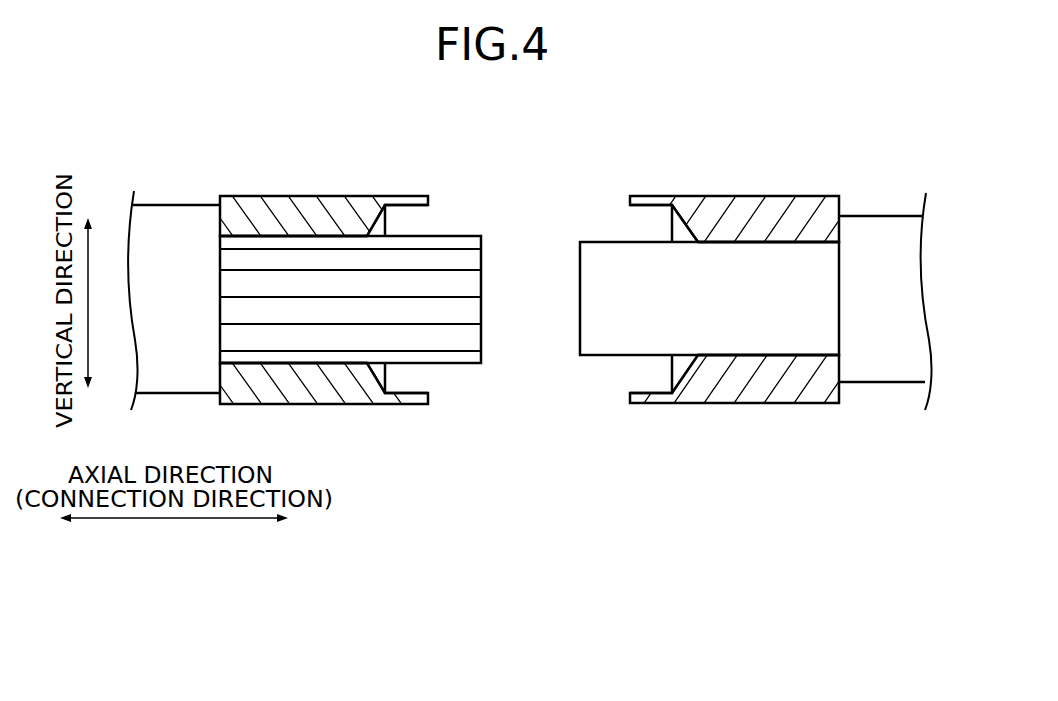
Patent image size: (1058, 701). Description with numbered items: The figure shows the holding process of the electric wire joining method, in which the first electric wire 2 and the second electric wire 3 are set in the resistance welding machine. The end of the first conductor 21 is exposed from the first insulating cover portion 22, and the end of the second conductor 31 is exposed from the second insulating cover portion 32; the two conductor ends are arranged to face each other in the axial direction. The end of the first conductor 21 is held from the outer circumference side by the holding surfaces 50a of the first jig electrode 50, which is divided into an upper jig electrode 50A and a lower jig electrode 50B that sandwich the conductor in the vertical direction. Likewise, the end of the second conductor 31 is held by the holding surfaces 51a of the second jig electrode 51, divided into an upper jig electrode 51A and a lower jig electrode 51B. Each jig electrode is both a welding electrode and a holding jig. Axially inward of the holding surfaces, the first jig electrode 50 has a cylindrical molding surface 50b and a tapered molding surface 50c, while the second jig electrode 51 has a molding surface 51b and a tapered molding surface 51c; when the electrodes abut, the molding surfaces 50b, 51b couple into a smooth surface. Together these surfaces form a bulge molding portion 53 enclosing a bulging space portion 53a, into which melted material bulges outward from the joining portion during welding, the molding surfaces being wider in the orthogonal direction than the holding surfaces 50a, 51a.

The first electric wire 2 is at (287, 119).
The first conductor 21 is at (271, 233).
The first insulating cover portion 22 is at (160, 205).
The second electric wire 3 is at (905, 119).
The second conductor 31 is at (773, 238).
The second insulating cover portion 32 is at (886, 216).
The first jig electrode 50 is at (346, 303).
The upper jig electrode 50A is at (410, 197).
The lower jig electrode 50B is at (410, 403).
The holding surface 50a is at (314, 240).
The molding surface 50b is at (414, 224).
The tapered molding surface 50c is at (397, 210).
The second jig electrode 51 is at (711, 303).
The upper jig electrode 51A is at (648, 197).
The lower jig electrode 51B is at (648, 403).
The holding surface 51a is at (742, 240).
The molding surface 51b is at (648, 224).
The tapered molding surface 51c is at (661, 210).
The bulge molding portion 53 is at (531, 298).
The bulging space portion 53a is at (407, 373).